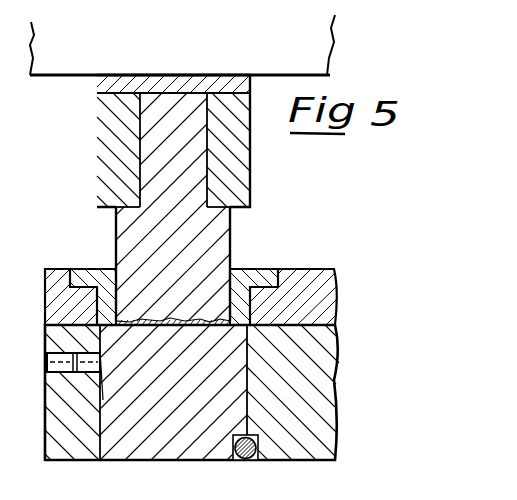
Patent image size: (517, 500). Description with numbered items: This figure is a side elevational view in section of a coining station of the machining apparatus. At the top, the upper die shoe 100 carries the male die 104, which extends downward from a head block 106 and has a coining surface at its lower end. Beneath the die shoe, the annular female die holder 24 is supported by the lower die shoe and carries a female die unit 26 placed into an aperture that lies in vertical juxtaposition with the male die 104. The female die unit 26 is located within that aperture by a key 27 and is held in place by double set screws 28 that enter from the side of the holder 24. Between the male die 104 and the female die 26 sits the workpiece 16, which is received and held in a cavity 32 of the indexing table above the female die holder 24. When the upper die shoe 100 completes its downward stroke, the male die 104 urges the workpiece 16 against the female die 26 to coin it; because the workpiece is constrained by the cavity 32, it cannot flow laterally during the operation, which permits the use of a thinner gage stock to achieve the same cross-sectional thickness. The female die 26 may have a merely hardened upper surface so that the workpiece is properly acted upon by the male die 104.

The upper die shoe 100 is at (226, 257).
The ram head block 106 is at (250, 165).
The male die 104 is at (230, 237).
The cavity 32 is at (250, 301).
The workpiece 16 is at (222, 328).
The female die holder 24 is at (336, 374).
The female die unit 26 is at (163, 457).
The double set screws 28 is at (83, 376).
The key 27 is at (247, 460).